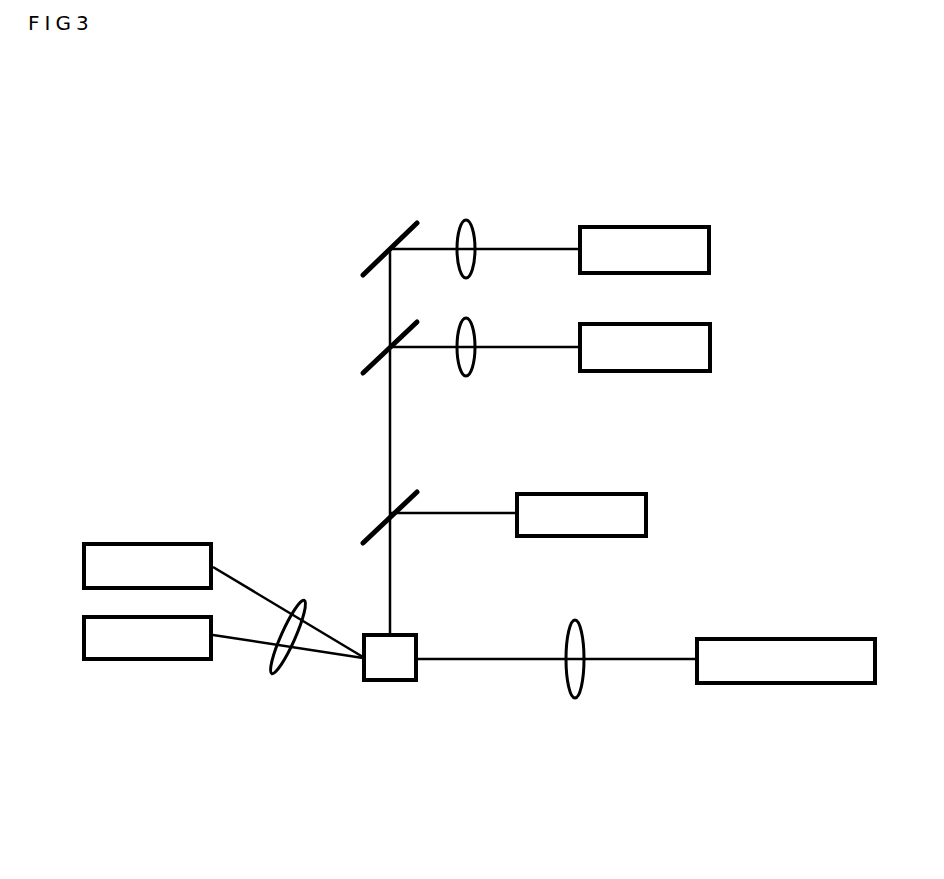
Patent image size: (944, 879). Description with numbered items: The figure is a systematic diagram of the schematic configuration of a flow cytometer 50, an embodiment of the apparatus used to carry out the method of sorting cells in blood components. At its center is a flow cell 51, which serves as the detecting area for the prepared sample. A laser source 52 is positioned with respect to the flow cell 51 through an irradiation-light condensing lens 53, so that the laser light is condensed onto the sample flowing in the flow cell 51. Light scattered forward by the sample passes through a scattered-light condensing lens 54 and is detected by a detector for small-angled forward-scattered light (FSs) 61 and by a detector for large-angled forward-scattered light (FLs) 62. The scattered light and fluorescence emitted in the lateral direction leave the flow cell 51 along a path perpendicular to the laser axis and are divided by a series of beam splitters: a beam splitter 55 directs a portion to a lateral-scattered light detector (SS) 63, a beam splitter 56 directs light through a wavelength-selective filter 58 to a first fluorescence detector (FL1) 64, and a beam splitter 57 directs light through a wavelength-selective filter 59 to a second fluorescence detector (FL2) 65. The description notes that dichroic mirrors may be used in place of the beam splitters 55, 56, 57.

The optical system / image scanning unit 50 is at (268, 340).
The flow cell 51 is at (392, 664).
The laser source 52 is at (716, 678).
The irradiation-light condensing lens 53 is at (573, 672).
The scattered-light condensing lens 54 is at (278, 660).
The beam splitter 55 is at (372, 530).
The beam splitter 56 is at (372, 367).
The beam splitter 57 is at (370, 262).
The wavelength-selective filter 58 is at (467, 345).
The wavelength-selective filter 59 is at (470, 238).
The detector for small-angled forward-scattered light (FSs) 61 is at (115, 642).
The detector for large-angled forward-scattered light (FLs) 62 is at (108, 558).
The lateral-scattered light detector (SS) 63 is at (618, 510).
The first fluorescence detector (FL1) 64 is at (685, 340).
The second fluorescence detector (FL2) 65 is at (677, 245).